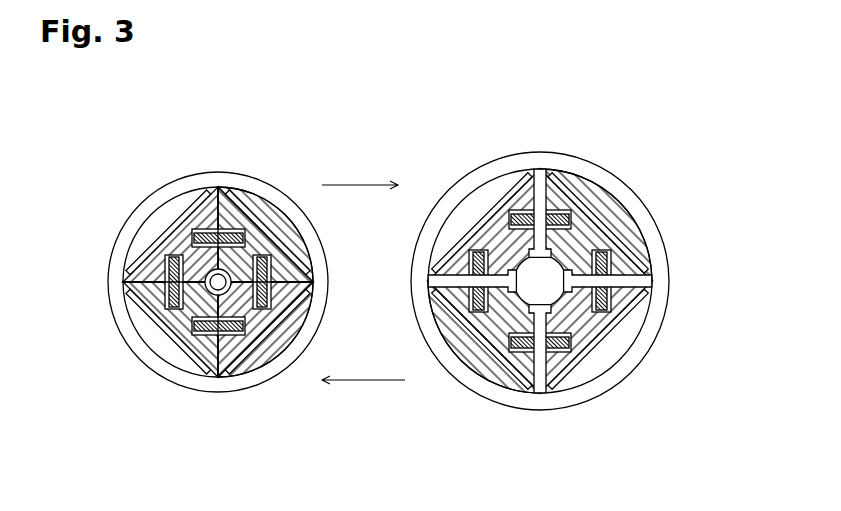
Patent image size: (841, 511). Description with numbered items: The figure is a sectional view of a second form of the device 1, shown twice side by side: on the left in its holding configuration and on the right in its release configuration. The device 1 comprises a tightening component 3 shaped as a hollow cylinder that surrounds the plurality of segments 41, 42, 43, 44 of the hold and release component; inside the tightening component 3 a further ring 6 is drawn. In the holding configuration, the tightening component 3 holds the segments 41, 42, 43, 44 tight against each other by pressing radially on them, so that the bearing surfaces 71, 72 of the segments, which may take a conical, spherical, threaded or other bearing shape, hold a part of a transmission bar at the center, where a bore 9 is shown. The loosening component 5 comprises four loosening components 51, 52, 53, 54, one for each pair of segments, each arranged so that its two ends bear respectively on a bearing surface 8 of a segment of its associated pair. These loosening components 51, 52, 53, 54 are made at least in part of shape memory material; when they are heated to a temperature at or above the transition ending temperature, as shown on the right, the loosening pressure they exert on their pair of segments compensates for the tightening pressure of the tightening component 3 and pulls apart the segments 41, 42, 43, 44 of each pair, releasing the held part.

The device 1 is at (668, 183).
The tightening component 3 is at (142, 350).
The loosening component 5 is at (208, 212).
The stator yoke ring 6 is at (287, 347).
The bearing surface 8 is at (626, 233).
The shaft bore 9 is at (553, 272).
The segment 41 is at (256, 242).
The segment 42 is at (246, 340).
The segment 43 is at (172, 333).
The segment 44 is at (172, 240).
The loosening component 51 is at (646, 295).
The loosening component 52 is at (540, 345).
The loosening component 53 is at (558, 226).
The loosening component 54 is at (478, 283).
The bearing surface 71 is at (258, 294).
The bearing surface 72 is at (268, 334).